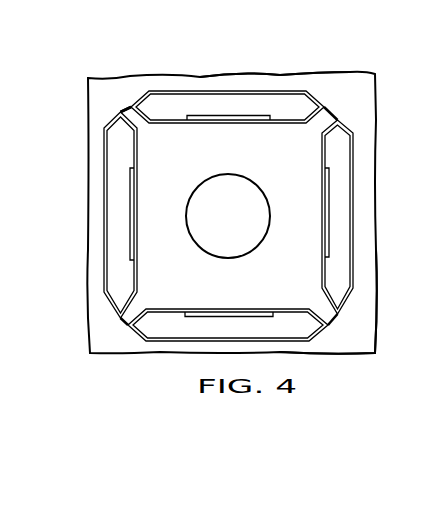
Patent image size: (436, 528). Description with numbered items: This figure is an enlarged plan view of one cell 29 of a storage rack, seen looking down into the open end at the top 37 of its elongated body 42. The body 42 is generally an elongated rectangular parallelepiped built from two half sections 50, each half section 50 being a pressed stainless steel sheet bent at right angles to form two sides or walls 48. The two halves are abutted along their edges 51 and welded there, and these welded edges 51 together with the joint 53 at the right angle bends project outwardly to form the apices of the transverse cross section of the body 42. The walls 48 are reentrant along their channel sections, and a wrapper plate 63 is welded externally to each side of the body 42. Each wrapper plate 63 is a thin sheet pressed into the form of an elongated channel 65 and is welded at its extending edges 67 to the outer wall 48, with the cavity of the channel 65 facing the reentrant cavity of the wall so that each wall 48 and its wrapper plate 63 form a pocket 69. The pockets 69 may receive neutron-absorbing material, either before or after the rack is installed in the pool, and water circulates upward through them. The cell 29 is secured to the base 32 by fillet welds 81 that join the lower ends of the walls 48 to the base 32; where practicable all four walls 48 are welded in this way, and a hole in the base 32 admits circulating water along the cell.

The cell 29 is at (172, 127).
The elongated body 42 is at (247, 71).
The base 32 is at (338, 346).
The half section 50 is at (277, 90).
The sides or walls 48 is at (263, 309).
The fillet welds 81 is at (197, 314).
The wrapper plate 63 is at (105, 272).
The elongated channel 65 is at (116, 210).
The pocket 69 is at (340, 159).
The open end at the top 37 is at (313, 280).
The edges 51 is at (127, 103).
The extending edges 67 is at (122, 107).
The joint 53 is at (122, 326).